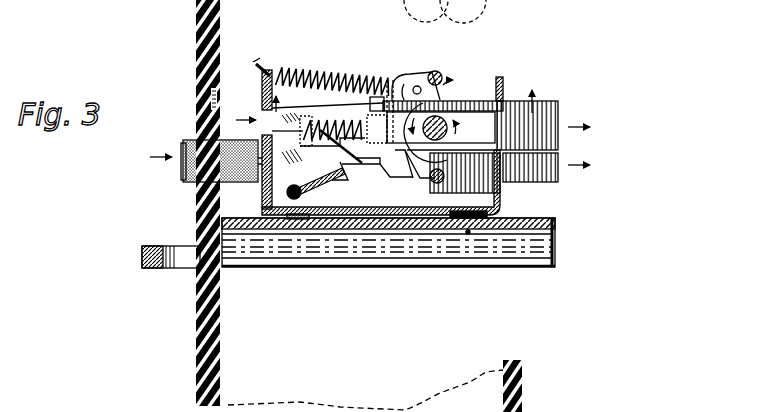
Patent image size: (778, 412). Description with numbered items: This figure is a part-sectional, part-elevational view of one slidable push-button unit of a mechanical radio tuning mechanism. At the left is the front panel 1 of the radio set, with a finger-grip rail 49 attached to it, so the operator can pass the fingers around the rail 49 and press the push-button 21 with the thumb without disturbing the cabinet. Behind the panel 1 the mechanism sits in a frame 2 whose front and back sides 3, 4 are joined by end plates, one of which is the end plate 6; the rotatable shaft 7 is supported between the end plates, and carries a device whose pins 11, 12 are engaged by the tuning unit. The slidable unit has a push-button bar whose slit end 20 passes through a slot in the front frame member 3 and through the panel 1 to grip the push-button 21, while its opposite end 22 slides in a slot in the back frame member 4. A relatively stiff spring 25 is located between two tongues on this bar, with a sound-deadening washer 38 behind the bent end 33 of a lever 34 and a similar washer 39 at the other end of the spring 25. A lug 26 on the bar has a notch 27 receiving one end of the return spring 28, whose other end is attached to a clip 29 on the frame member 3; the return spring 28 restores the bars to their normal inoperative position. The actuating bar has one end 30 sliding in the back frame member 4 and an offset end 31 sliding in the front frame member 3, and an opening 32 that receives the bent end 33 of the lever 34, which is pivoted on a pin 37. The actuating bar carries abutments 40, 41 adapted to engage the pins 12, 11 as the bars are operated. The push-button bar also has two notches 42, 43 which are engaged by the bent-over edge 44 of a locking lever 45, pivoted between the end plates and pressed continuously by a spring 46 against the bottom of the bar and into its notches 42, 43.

The front panel 1 is at (194, 82).
The frame 2 is at (516, 100).
The front frame member 3 is at (278, 92).
The back frame member 4 is at (506, 95).
The end plate 6 is at (297, 200).
The rotatable shaft 7 is at (450, 150).
The pin 11 is at (412, 182).
The pin 12 is at (474, 101).
The projecting end 20 is at (198, 183).
The push-button 21 is at (185, 142).
The end 22 is at (584, 166).
The spring 25 is at (375, 95).
The lug 26 is at (412, 76).
The notch 27 is at (463, 11).
The return spring 28 is at (340, 84).
The clip 29 is at (264, 72).
The end 30 is at (576, 124).
The offset end 31 is at (262, 118).
The opening 32 is at (499, 78).
The bent end 33 is at (366, 153).
The lever 34 is at (385, 114).
The pin 37 is at (421, 80).
The washer 38 is at (375, 87).
The washer 39 is at (300, 126).
The abutment 40 is at (419, 174).
The abutment 41 is at (441, 84).
The notch 42 is at (407, 196).
The notch 43 is at (323, 176).
The bent-over edge 44 is at (357, 186).
The locking lever 45 is at (333, 184).
The spring 46 is at (380, 195).
The rail 49 is at (163, 247).